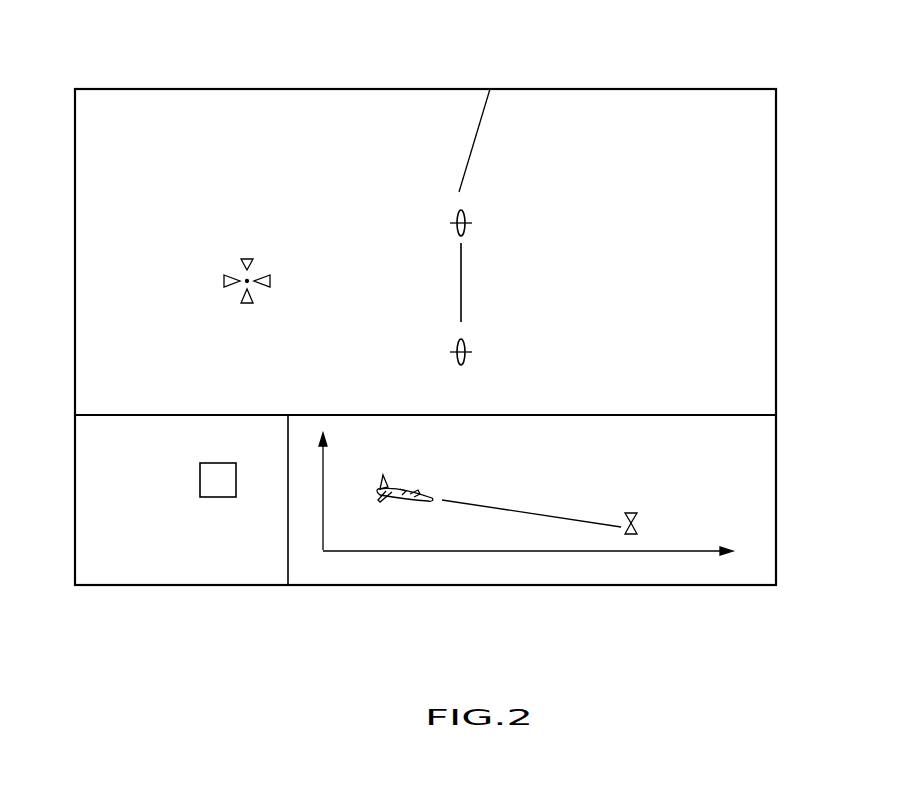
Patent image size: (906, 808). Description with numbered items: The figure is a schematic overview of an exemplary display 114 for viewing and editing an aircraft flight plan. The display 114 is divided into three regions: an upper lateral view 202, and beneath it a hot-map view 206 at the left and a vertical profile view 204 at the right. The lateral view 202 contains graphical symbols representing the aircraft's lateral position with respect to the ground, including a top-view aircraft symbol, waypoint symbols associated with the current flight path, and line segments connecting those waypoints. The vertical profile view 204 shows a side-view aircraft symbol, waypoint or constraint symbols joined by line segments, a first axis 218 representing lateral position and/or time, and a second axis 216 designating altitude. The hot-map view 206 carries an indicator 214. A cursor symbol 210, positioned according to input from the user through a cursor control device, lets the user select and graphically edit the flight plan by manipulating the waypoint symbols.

The display 114 is at (747, 76).
The lateral view 202 is at (758, 252).
The vertical profile view 204 is at (776, 443).
The hot-map view 206 is at (80, 468).
The cursor symbol 210 is at (265, 293).
The indicator 214 is at (204, 489).
The second axis 216 is at (323, 468).
The first axis 218 is at (700, 549).